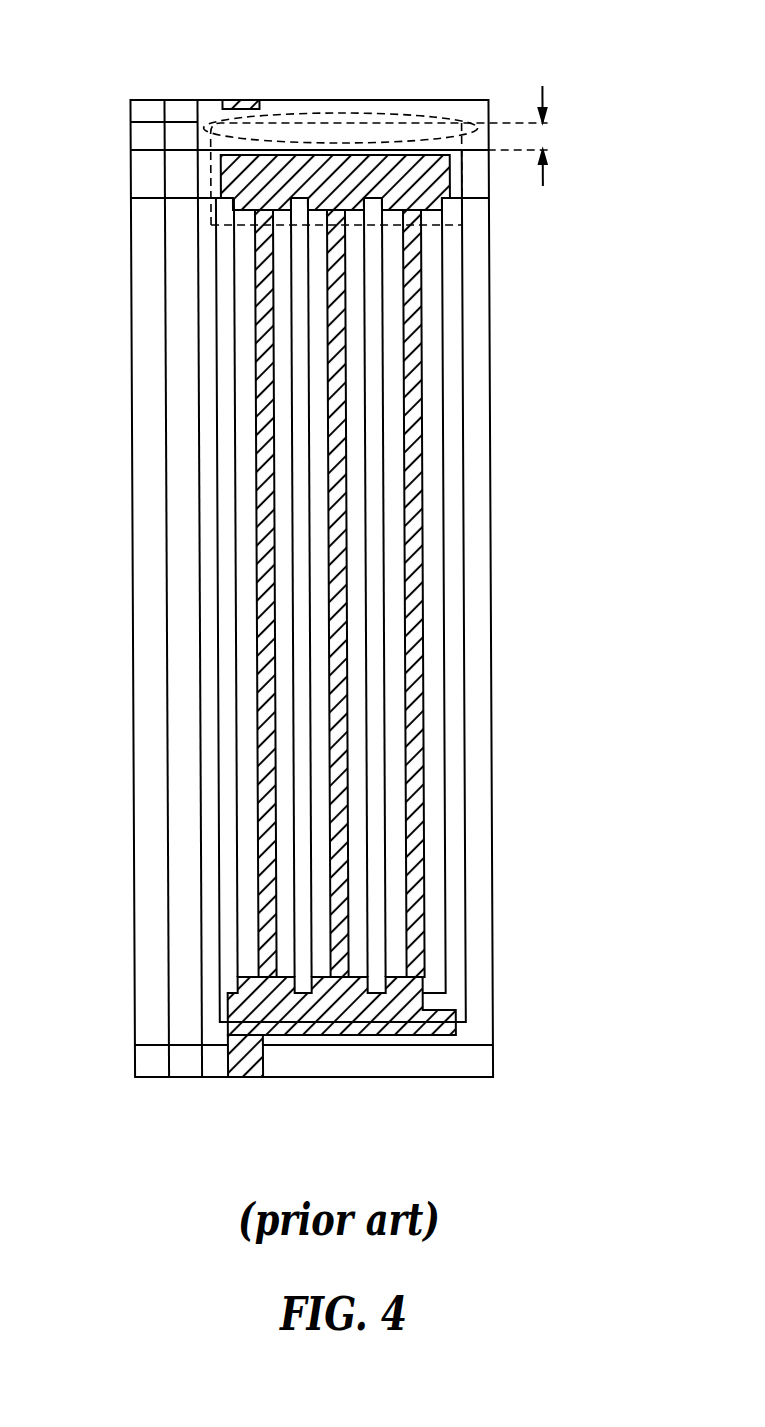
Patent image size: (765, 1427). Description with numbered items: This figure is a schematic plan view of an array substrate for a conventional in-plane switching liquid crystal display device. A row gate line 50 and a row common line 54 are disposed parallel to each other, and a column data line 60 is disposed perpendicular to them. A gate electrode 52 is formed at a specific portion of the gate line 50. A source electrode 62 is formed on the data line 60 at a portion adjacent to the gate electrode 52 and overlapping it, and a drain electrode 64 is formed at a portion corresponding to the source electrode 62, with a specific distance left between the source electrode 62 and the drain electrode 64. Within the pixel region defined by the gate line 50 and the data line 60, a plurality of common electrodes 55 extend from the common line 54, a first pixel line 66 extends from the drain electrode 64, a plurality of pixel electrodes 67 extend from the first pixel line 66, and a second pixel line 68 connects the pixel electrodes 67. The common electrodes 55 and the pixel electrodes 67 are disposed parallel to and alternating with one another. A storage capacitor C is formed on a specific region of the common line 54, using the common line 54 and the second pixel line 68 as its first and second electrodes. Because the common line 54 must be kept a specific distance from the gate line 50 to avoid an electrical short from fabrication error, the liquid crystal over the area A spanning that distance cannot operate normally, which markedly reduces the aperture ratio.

The gate line 50 is at (462, 1042).
The gate electrode 52 is at (208, 1057).
The common line 54 is at (146, 183).
The common electrodes 55 is at (462, 610).
The data line 60 is at (178, 944).
The source electrode 62 is at (179, 1062).
The drain electrode 64 is at (241, 1068).
The first pixel line 66 is at (355, 1035).
The pixel electrodes 67 is at (423, 507).
The second pixel line 68 is at (448, 182).
The area between gate and common lines A is at (380, 113).
The storage capacitor C is at (450, 195).